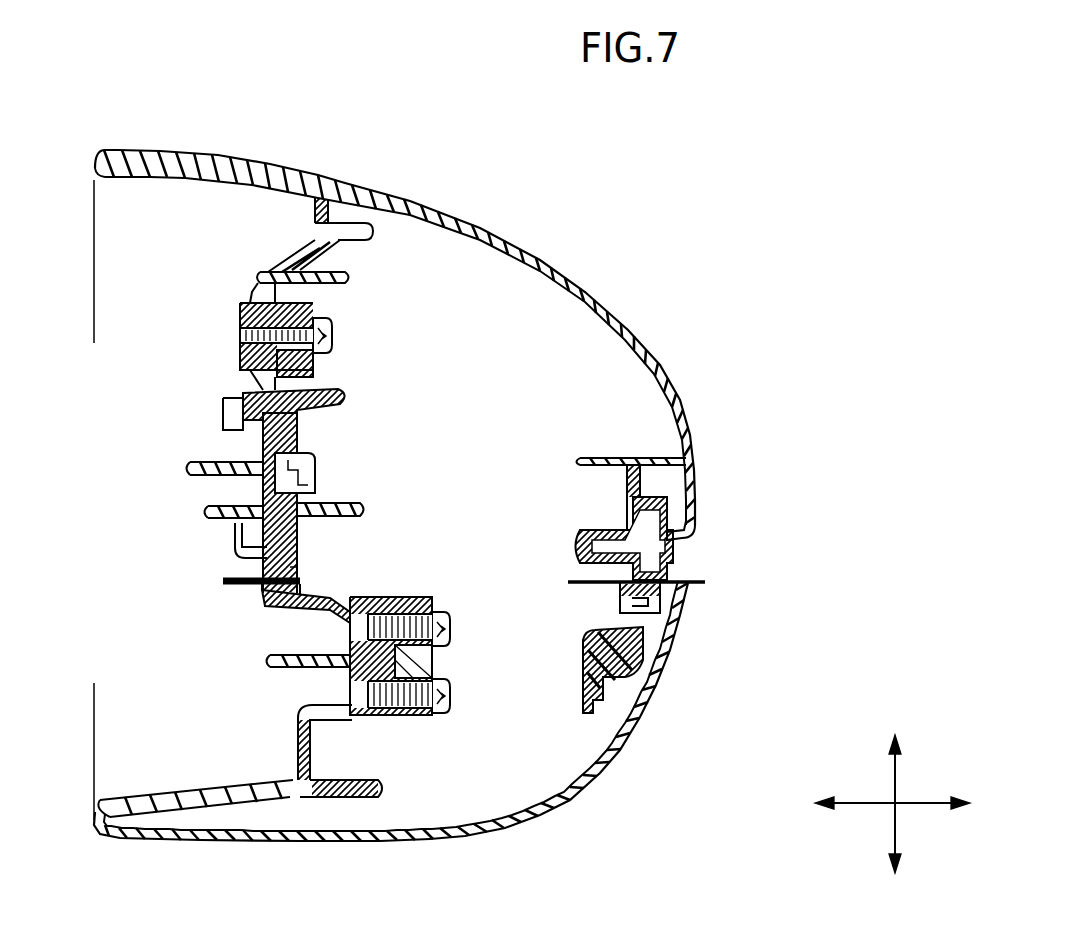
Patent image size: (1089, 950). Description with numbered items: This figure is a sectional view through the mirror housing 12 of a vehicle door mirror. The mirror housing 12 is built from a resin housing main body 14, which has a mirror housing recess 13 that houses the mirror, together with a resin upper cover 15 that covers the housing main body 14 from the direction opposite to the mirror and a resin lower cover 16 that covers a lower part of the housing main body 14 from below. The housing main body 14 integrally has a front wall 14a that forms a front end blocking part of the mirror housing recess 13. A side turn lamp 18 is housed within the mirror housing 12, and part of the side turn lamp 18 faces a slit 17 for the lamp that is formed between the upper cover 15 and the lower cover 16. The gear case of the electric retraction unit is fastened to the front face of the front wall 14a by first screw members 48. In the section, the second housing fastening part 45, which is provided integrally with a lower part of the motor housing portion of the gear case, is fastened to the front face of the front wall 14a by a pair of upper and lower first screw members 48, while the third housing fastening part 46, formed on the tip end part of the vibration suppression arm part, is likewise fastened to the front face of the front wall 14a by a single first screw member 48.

The mirror housing 12 is at (346, 184).
The mirror housing recess 13 is at (132, 803).
The housing main body 14 is at (200, 842).
The front wall 14a is at (333, 603).
The upper cover 15 is at (576, 288).
The lower cover 16 is at (566, 803).
The slit 17 is at (682, 540).
The side turn lamp 18 is at (673, 547).
The second housing fastening part 45 is at (434, 664).
The third housing fastening part 46 is at (315, 366).
The first screw member 48 is at (333, 335).